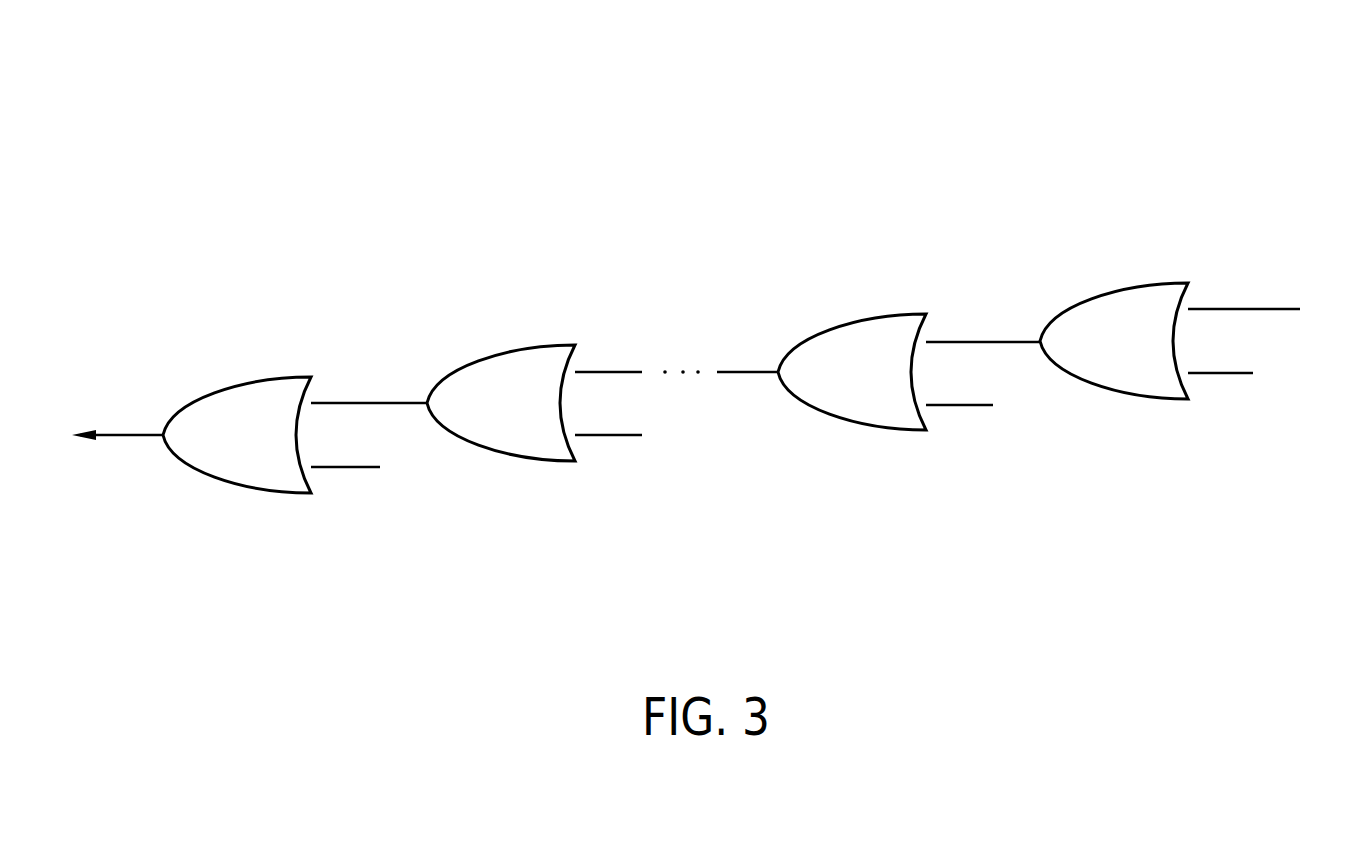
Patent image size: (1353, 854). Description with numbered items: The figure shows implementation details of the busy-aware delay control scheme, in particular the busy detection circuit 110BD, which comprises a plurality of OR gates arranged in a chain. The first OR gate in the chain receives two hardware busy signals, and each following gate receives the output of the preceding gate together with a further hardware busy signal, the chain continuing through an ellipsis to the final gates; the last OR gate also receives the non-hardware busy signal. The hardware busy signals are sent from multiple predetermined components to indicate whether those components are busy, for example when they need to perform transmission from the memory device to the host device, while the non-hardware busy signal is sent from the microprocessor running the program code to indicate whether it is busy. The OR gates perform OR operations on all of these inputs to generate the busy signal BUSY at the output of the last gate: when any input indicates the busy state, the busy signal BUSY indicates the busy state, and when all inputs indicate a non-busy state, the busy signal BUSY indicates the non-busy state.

The busy detection circuit 110BD is at (278, 108).
The busy signal BUSY is at (160, 420).